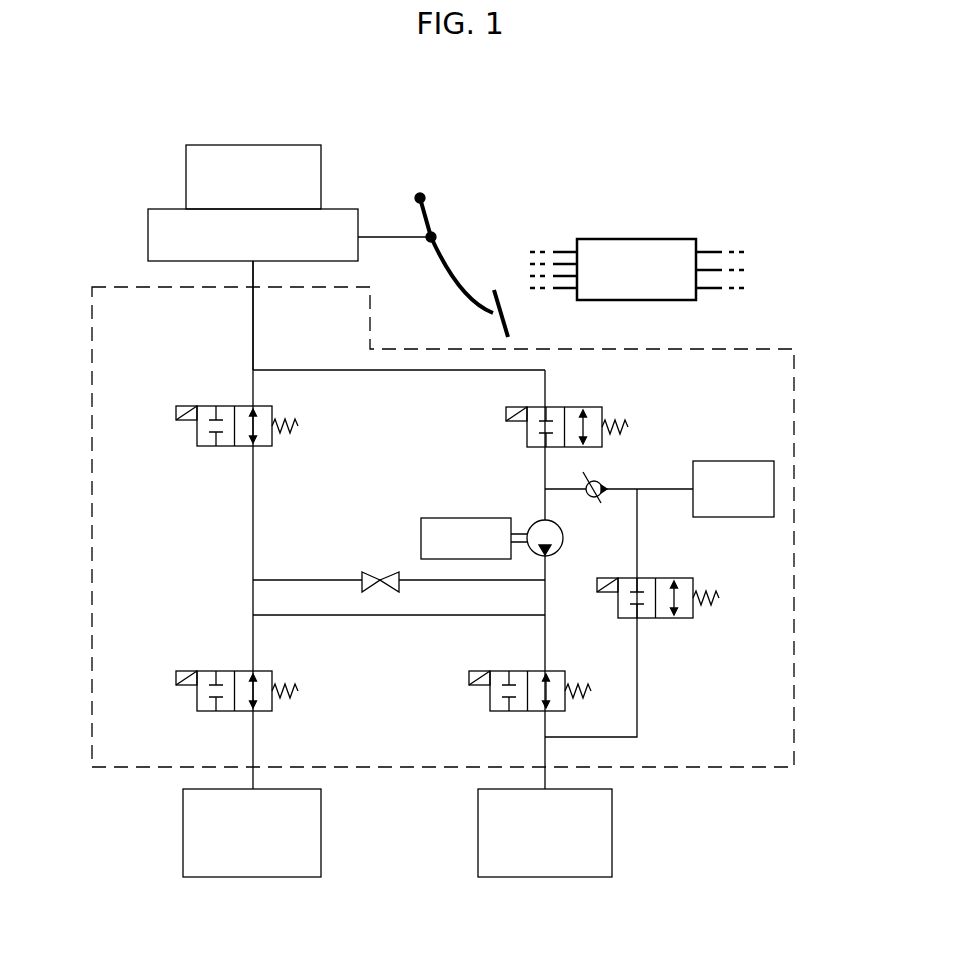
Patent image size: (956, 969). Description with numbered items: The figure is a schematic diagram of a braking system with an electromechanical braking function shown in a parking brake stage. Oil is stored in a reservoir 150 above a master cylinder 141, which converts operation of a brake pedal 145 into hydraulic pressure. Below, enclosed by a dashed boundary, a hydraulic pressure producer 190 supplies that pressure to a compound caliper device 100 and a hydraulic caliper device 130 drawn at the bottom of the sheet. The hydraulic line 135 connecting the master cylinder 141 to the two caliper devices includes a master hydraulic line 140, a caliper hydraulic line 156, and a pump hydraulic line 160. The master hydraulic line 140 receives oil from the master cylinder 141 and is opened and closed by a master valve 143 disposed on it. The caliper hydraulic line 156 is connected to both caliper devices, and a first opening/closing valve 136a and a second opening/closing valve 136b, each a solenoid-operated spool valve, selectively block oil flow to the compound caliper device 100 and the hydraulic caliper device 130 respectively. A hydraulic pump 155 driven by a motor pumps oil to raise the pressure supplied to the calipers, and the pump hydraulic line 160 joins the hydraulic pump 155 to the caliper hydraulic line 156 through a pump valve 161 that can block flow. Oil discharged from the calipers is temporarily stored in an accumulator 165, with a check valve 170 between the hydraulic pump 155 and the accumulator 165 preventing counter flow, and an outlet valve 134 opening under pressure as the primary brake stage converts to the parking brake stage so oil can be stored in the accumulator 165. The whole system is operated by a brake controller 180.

The compound caliper device 100 is at (546, 877).
The hydraulic caliper device 130 is at (252, 877).
The outlet valve 134 is at (695, 617).
The hydraulic line 135 is at (228, 545).
The first opening/closing valve 136a is at (490, 698).
The second opening/closing valve 136b is at (197, 698).
The master hydraulic line 140 is at (253, 312).
The master cylinder 141 is at (148, 235).
The master valve 143 is at (197, 433).
The brake pedal 145 is at (456, 282).
The reservoir 150 is at (321, 176).
The hydraulic pump 155 is at (533, 522).
The caliper hydraulic line 156 is at (253, 634).
The pump hydraulic line 160 is at (328, 578).
The pump valve 161 is at (374, 572).
The accumulator 165 is at (735, 461).
The check valve 170 is at (602, 480).
The brake controller 180 is at (636, 232).
The hydraulic pressure producer 190 is at (764, 348).